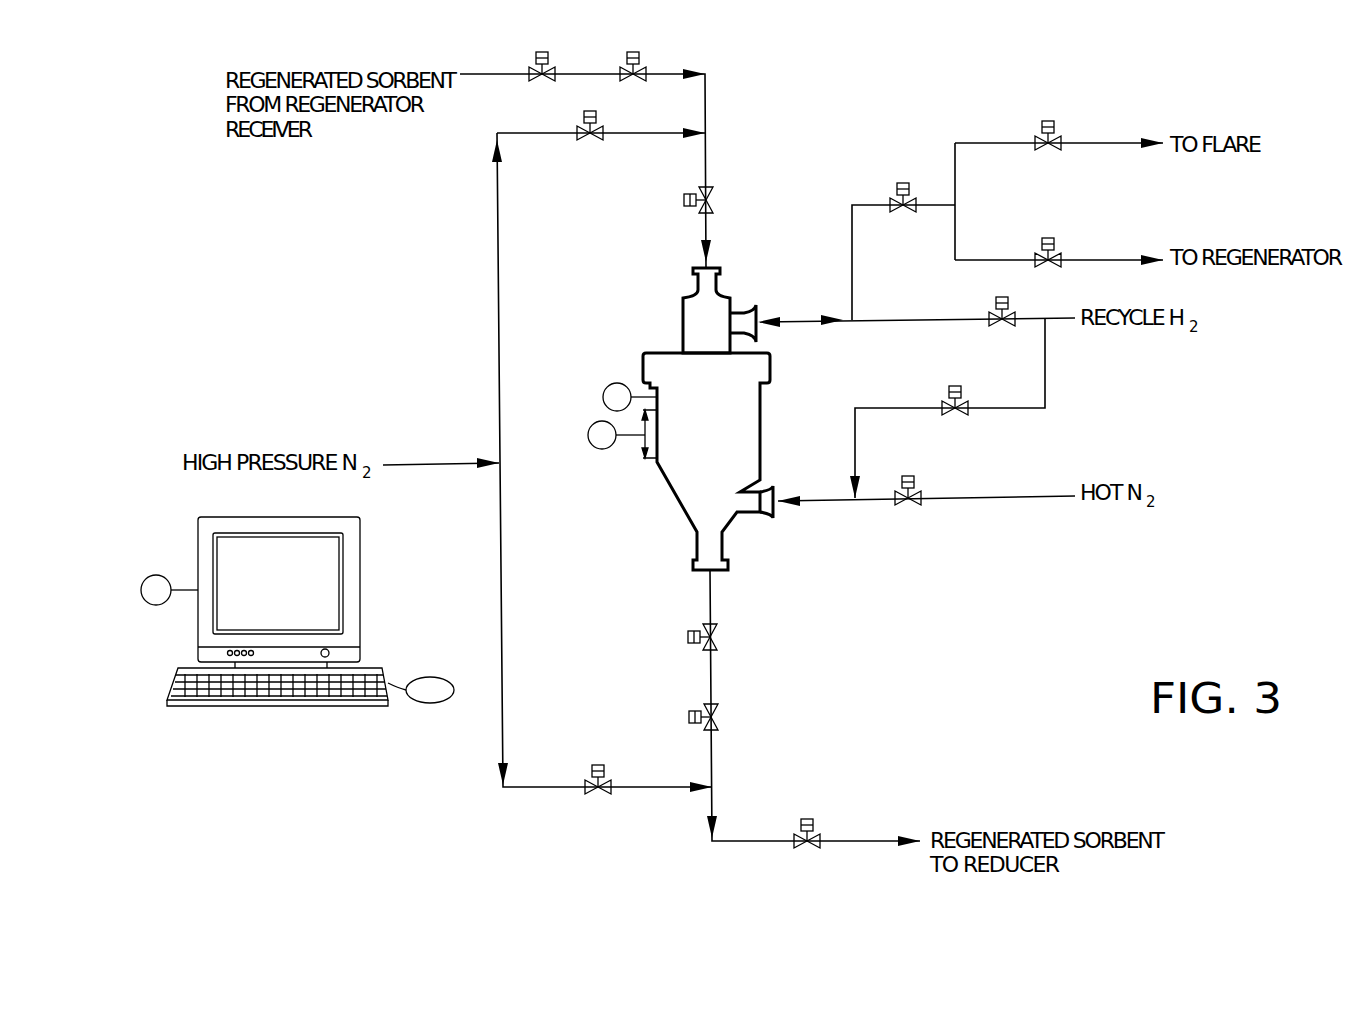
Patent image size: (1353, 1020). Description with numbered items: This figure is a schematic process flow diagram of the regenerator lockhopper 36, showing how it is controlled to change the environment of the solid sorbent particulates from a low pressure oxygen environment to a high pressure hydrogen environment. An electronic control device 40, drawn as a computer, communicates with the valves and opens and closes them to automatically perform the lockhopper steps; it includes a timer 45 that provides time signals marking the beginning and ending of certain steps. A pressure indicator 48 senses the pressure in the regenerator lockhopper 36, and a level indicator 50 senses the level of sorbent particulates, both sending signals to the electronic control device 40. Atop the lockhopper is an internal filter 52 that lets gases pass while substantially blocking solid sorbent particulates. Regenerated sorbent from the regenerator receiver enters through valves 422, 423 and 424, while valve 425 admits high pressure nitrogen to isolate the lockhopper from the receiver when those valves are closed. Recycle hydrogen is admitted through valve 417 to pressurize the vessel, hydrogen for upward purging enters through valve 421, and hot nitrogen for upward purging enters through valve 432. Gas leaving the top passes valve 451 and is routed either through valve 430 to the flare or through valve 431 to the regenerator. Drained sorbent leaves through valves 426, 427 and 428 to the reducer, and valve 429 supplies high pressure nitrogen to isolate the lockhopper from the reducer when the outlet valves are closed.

The regenerator lockhopper 36 is at (677, 497).
The internal filter 52 is at (683, 330).
The pressure indicator 48 is at (603, 393).
The level indicator 50 is at (588, 433).
The electronic control device 40 is at (198, 548).
The timer 45 is at (141, 588).
The valve 422 is at (536, 54).
The valve 423 is at (627, 54).
The valve 425 is at (584, 112).
The valve 424 is at (684, 200).
The valve 451 is at (897, 186).
The valve 430 is at (1054, 124).
The valve 431 is at (1054, 241).
The valve 417 is at (1008, 300).
The valve 421 is at (961, 389).
The valve 432 is at (914, 479).
The valve 426 is at (688, 637).
The valve 427 is at (689, 717).
The valve 429 is at (592, 768).
The valve 428 is at (813, 822).